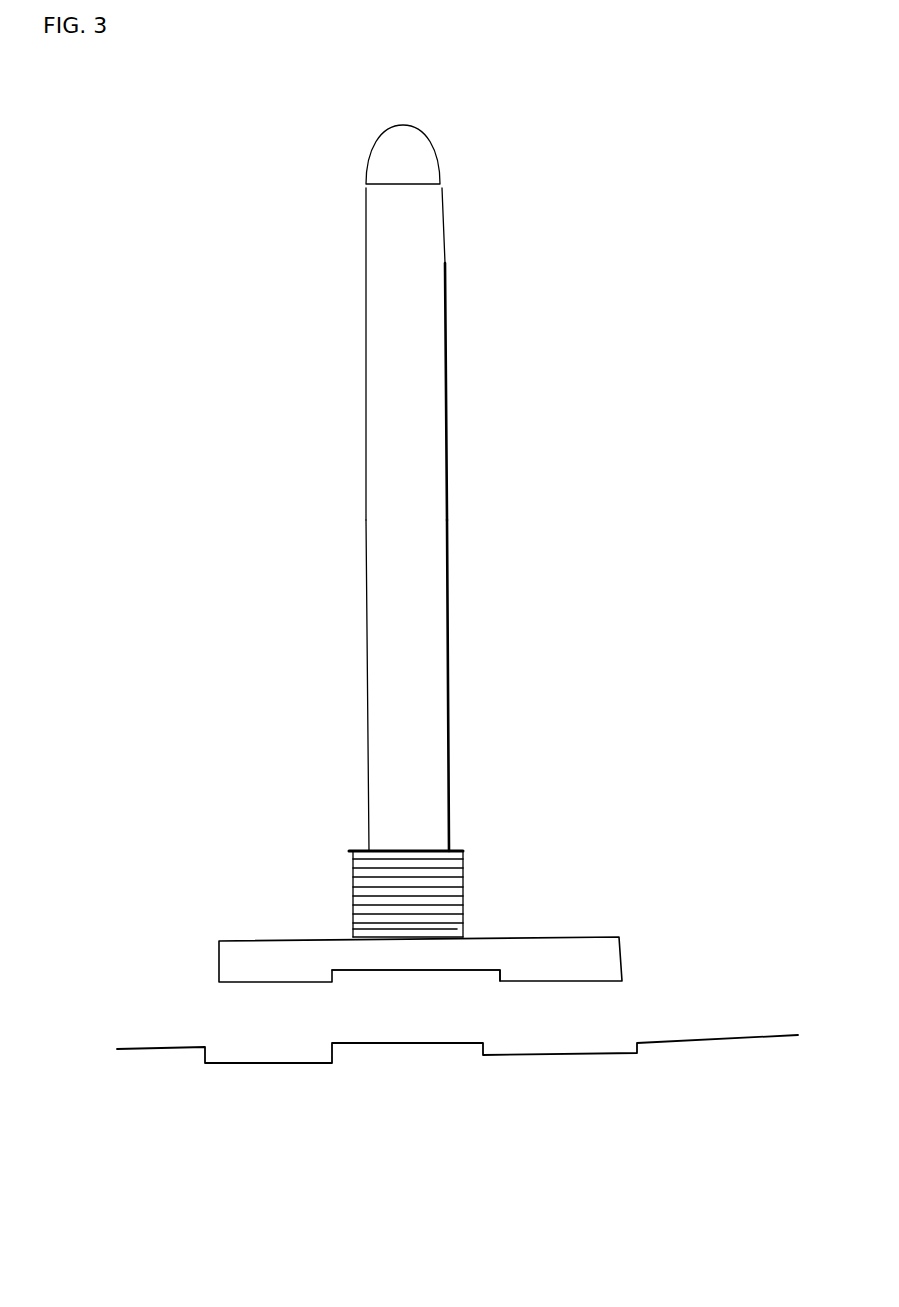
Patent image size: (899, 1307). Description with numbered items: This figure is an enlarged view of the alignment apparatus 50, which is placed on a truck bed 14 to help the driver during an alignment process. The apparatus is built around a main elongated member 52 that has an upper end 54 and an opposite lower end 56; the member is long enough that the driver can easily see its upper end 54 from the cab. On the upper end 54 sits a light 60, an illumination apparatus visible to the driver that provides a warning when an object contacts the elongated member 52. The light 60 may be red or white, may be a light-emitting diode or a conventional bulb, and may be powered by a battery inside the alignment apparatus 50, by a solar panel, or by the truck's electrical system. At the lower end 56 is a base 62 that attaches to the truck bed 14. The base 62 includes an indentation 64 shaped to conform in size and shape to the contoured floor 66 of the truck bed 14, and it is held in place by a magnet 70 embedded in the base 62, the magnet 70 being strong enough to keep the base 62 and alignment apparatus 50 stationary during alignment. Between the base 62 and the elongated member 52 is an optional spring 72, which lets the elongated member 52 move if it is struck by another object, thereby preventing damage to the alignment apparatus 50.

The truck bed 14 is at (658, 985).
The alignment apparatus 50 is at (248, 622).
The main elongated member 52 is at (365, 525).
The upper end 54 is at (308, 193).
The lower end 56 is at (518, 763).
The light 60 is at (438, 107).
The base 62 is at (532, 875).
The indentation 64 is at (468, 986).
The contoured floor 66 is at (278, 1097).
The magnet 70 is at (247, 954).
The spring 72 is at (353, 898).